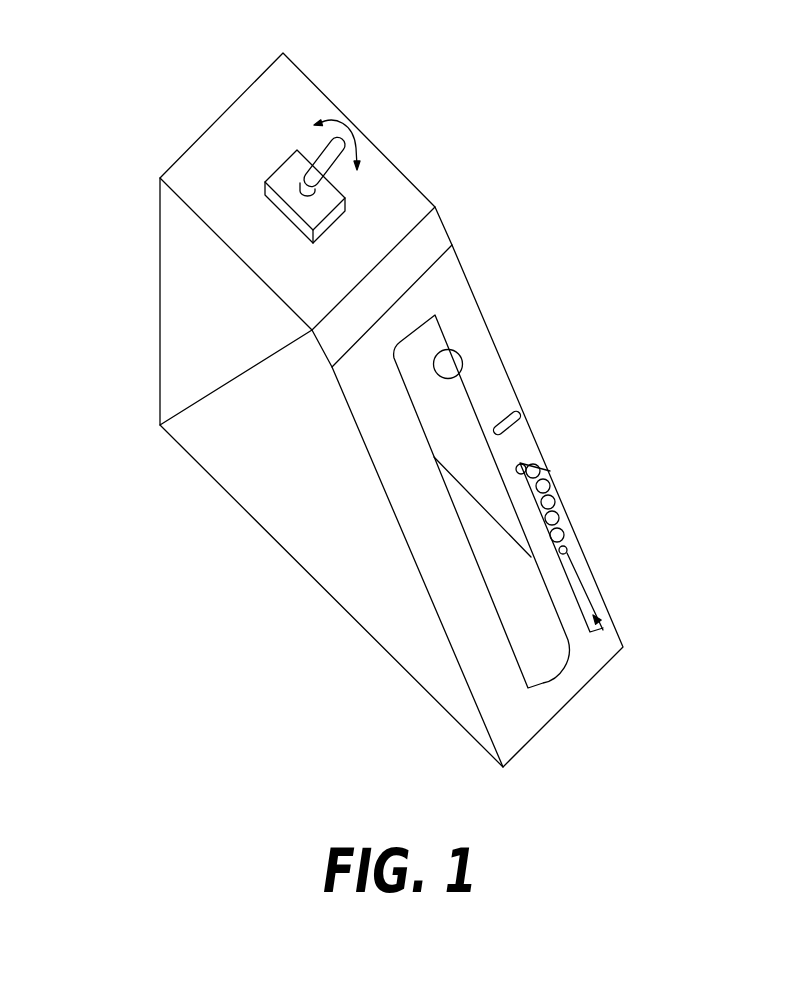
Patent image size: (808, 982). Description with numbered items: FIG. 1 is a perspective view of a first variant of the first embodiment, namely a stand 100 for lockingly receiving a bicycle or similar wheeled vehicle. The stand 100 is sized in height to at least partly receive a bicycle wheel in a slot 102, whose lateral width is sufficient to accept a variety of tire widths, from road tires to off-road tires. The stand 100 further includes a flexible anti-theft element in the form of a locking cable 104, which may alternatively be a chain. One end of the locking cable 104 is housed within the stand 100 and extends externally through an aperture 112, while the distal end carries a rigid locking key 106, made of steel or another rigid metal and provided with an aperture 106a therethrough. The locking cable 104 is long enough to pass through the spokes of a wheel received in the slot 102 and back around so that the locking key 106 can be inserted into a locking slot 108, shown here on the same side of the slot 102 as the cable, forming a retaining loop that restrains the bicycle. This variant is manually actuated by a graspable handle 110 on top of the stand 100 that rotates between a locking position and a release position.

The stand 100 is at (679, 181).
The manually graspable handle 110 is at (315, 152).
The slot 102 is at (459, 378).
The locking slot 108 is at (514, 416).
The aperture 112 is at (525, 467).
The locking cable 104 is at (577, 533).
The locking key 106 is at (582, 582).
The aperture 106a is at (600, 620).